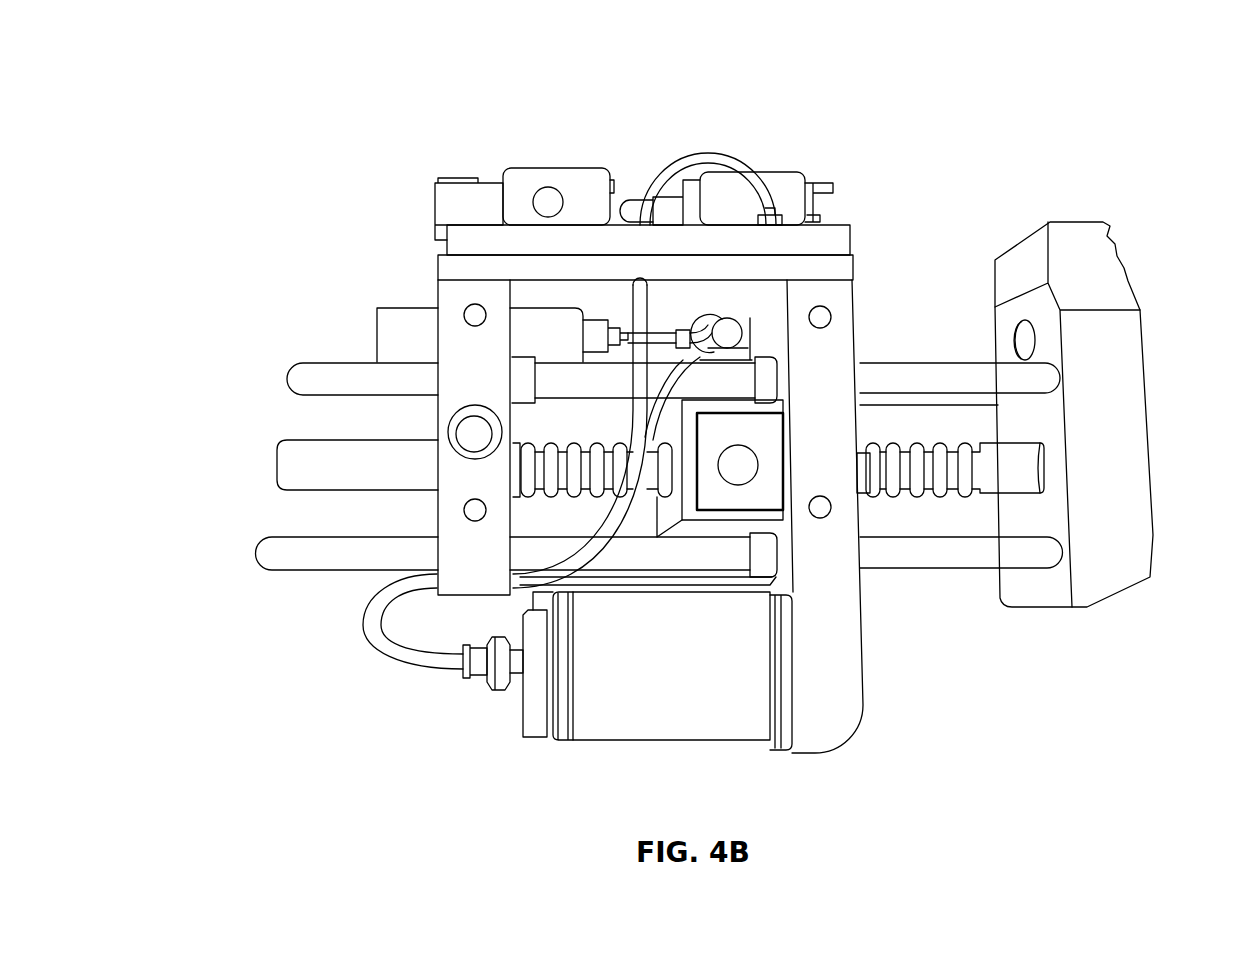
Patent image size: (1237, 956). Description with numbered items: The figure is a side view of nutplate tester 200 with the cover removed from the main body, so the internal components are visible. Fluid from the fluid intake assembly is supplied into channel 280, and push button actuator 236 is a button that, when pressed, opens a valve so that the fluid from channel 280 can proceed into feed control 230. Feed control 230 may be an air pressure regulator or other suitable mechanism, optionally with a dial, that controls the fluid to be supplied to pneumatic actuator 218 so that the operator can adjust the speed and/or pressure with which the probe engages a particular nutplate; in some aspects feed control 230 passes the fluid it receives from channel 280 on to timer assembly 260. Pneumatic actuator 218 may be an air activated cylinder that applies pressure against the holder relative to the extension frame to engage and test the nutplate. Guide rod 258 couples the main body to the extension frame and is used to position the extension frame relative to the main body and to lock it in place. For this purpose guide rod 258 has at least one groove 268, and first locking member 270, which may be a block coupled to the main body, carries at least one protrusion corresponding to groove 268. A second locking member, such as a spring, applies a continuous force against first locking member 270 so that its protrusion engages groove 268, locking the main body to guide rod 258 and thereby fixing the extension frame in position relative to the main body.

The nutplate tester 200 is at (422, 86).
The pneumatic actuator 218 is at (622, 698).
The feed control 230 is at (383, 308).
The push button actuator 236 is at (742, 320).
The guide rod 258 is at (1032, 462).
The timer assembly 260 is at (688, 170).
The groove 268 is at (683, 362).
The first locking member 270 is at (766, 485).
The channel 280 is at (478, 427).